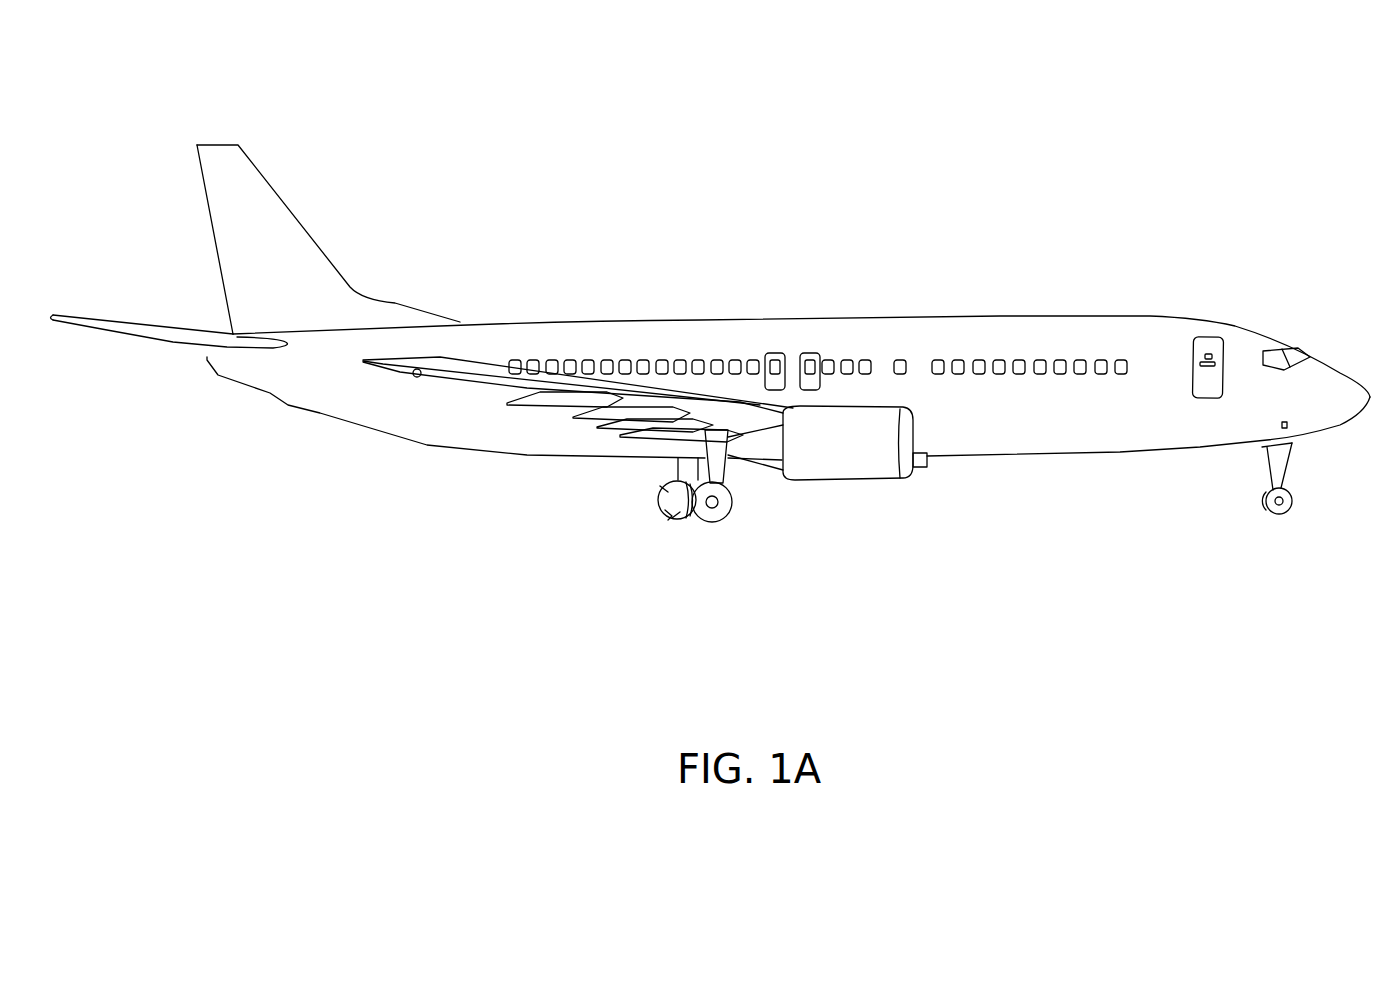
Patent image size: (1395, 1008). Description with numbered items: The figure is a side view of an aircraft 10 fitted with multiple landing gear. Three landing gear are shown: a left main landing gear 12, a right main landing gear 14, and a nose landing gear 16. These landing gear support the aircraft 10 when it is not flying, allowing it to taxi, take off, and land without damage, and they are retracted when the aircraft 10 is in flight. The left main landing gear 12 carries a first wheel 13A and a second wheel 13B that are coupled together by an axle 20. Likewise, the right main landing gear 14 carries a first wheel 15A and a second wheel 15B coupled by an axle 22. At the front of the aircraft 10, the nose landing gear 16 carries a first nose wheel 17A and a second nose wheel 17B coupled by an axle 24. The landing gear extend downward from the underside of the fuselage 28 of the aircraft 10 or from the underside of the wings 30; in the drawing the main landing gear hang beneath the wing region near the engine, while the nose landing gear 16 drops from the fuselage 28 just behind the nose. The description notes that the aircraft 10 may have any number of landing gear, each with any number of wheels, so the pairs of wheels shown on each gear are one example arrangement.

The aircraft 10 is at (912, 206).
The left main landing gear 12 is at (660, 476).
The first wheel 13A is at (662, 485).
The second wheel 13B is at (672, 518).
The right main landing gear 14 is at (672, 527).
The first wheel 15A is at (735, 503).
The second wheel 15B is at (688, 518).
The nose landing gear 16 is at (1280, 505).
The first nose wheel 17A is at (1258, 501).
The second nose wheel 17B is at (1287, 503).
The axle 20 is at (668, 513).
The axle 22 is at (718, 512).
The axle 24 is at (1280, 512).
The fuselage 28 is at (1262, 447).
The wings 30 is at (778, 426).